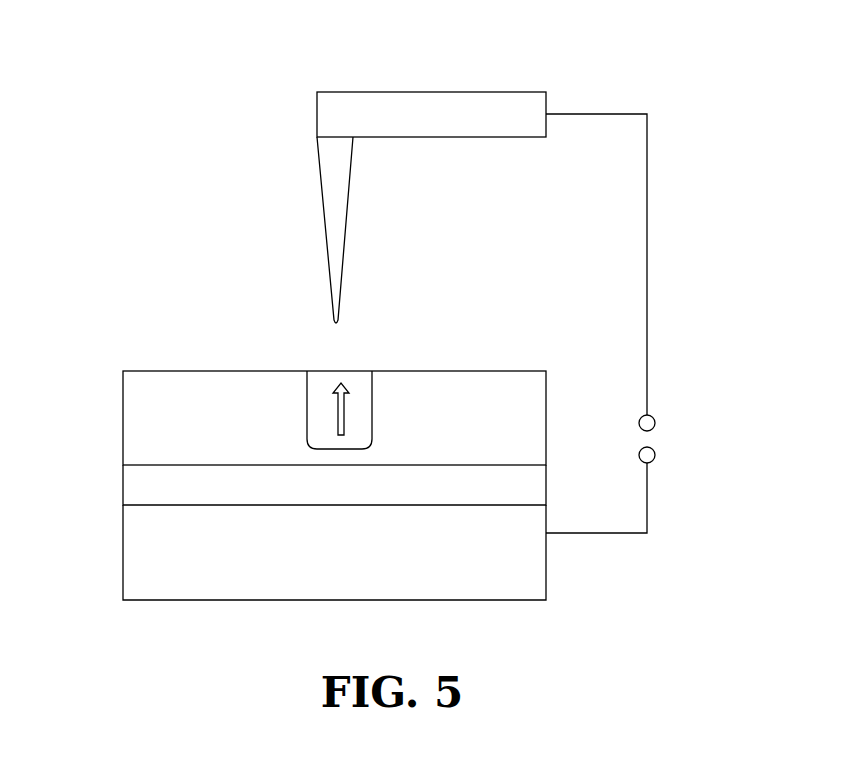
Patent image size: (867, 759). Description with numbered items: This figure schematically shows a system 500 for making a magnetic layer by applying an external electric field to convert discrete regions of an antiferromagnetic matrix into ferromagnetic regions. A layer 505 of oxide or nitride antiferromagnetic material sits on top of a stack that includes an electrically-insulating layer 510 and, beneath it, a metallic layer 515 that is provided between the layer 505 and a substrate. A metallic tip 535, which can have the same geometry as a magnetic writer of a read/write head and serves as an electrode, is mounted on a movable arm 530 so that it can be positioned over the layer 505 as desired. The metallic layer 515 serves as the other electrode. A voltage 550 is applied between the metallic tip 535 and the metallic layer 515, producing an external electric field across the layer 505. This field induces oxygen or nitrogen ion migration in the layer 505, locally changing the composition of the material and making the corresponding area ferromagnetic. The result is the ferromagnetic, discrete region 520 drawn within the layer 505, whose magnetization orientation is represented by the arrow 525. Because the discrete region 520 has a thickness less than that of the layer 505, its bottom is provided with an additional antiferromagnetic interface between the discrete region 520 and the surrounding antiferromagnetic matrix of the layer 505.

The system 500 is at (708, 133).
The layer 505 is at (156, 390).
The electrically-insulating layer 510 is at (133, 488).
The metallic layer 515 is at (133, 550).
The ferromagnetic discrete region 520 is at (358, 387).
The arrow 525 is at (333, 411).
The movable arm 530 is at (433, 92).
The metallic tip 535 is at (337, 325).
The voltage 550 is at (658, 438).